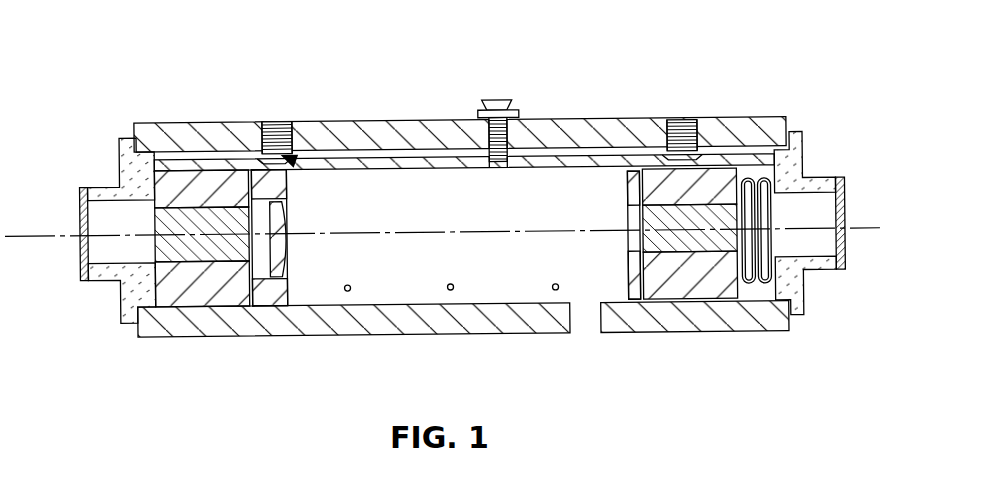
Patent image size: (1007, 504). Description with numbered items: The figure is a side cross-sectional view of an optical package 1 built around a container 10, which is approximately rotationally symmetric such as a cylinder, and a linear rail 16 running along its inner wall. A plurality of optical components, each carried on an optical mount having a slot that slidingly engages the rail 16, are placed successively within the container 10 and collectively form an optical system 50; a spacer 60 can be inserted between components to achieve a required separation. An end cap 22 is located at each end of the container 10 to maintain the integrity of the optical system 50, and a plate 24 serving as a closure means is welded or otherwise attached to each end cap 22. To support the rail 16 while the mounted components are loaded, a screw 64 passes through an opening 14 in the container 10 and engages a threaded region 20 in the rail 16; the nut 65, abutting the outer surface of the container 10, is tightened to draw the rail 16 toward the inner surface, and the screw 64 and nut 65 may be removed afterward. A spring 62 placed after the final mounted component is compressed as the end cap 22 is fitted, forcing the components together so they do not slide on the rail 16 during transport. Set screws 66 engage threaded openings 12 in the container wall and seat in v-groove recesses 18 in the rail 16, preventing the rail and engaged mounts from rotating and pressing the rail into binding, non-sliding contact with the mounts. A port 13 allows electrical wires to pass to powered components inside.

The optical package 1 is at (168, 63).
The container 10 is at (395, 124).
The threaded opening 12 is at (262, 124).
The port 13 is at (569, 325).
The opening 14 is at (482, 130).
The rail 16 is at (386, 172).
The recess 18 is at (294, 168).
The threaded region 20 is at (522, 168).
The end cap 22 is at (122, 163).
The plate 24 is at (82, 197).
The optical system 50 is at (465, 296).
The spacer 60 is at (626, 280).
The spring 62 is at (763, 296).
The screw 64 is at (497, 104).
The nut 65 is at (520, 118).
The set screw 66 is at (278, 124).